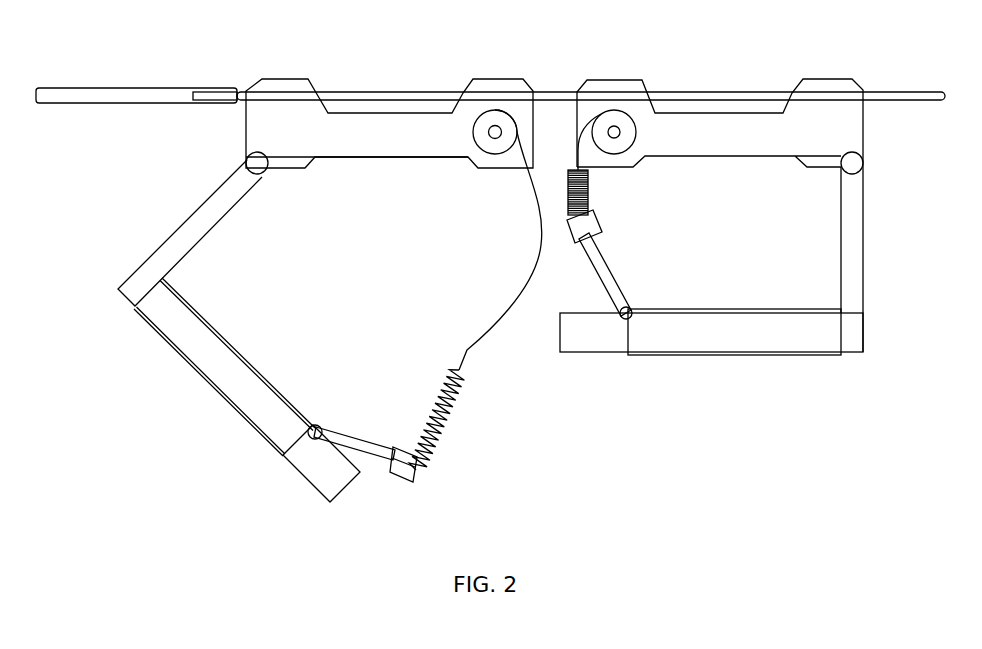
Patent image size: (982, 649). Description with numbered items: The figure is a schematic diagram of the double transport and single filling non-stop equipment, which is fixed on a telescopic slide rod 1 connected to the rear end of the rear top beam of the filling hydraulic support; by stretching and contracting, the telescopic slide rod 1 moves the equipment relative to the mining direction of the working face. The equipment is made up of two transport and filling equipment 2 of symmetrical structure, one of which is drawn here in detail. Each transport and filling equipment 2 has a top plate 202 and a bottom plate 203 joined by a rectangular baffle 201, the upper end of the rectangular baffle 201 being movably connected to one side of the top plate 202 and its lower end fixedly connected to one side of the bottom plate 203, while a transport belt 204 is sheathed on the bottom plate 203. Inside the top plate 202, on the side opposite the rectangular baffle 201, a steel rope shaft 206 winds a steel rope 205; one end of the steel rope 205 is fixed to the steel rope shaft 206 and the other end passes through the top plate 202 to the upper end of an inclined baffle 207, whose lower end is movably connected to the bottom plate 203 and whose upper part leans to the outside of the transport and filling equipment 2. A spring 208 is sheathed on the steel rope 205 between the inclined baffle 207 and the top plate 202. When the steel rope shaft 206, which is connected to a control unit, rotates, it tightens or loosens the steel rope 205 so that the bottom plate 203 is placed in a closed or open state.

The telescopic slide rod 1 is at (117, 97).
The transport and filling equipment 2 is at (902, 452).
The rectangular baffle 201 is at (853, 235).
The top plate 202 is at (700, 128).
The bottom plate 203 is at (853, 342).
The transport belt 204 is at (707, 338).
The steel rope 205 is at (585, 138).
The steel rope shaft 206 is at (622, 120).
The inclined baffle 207 is at (600, 267).
The spring 208 is at (585, 200).